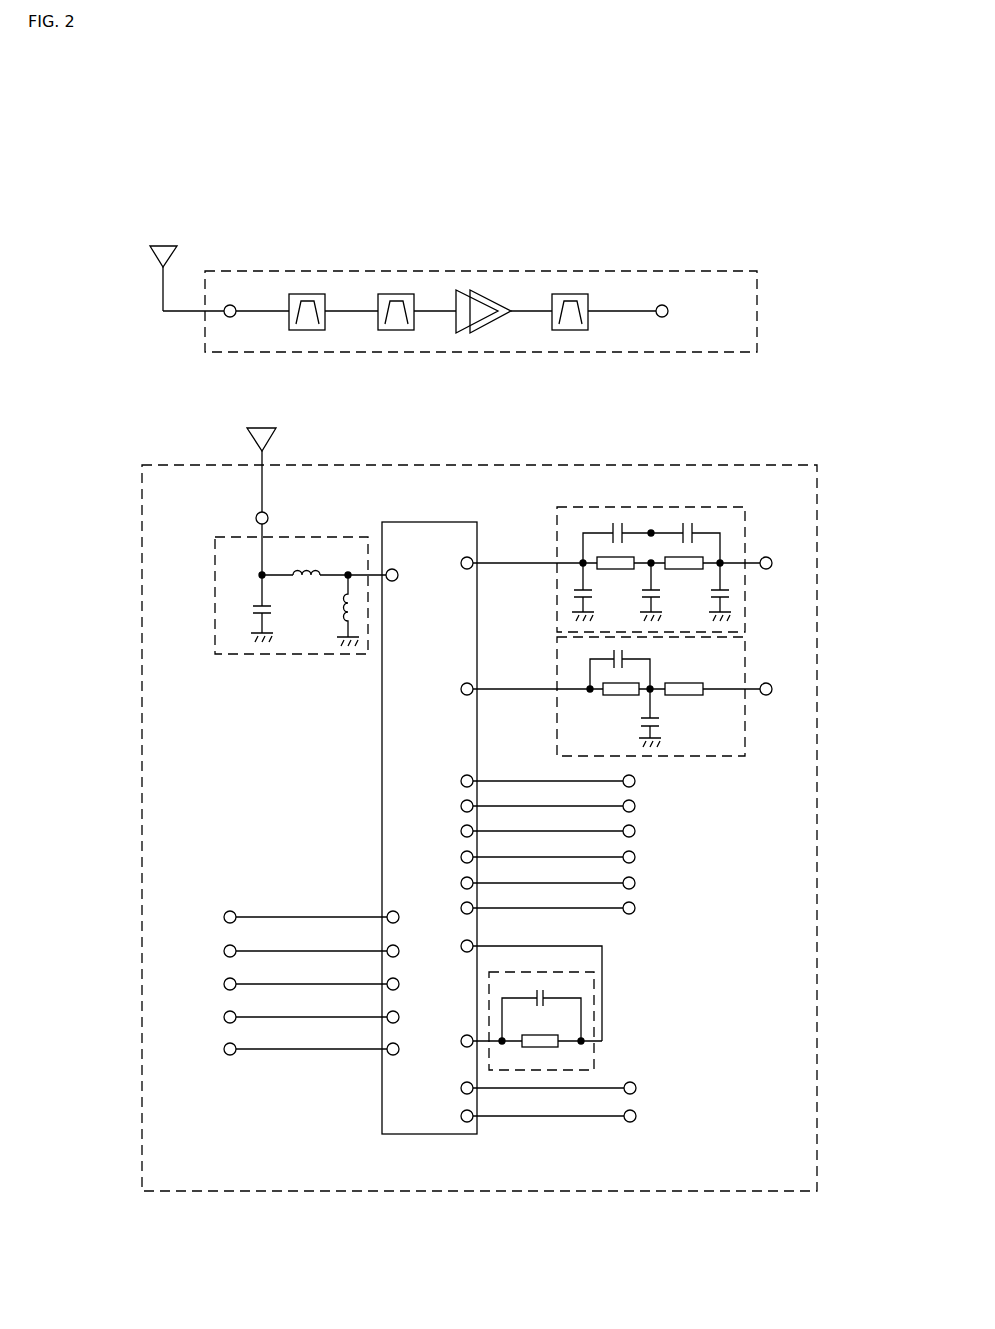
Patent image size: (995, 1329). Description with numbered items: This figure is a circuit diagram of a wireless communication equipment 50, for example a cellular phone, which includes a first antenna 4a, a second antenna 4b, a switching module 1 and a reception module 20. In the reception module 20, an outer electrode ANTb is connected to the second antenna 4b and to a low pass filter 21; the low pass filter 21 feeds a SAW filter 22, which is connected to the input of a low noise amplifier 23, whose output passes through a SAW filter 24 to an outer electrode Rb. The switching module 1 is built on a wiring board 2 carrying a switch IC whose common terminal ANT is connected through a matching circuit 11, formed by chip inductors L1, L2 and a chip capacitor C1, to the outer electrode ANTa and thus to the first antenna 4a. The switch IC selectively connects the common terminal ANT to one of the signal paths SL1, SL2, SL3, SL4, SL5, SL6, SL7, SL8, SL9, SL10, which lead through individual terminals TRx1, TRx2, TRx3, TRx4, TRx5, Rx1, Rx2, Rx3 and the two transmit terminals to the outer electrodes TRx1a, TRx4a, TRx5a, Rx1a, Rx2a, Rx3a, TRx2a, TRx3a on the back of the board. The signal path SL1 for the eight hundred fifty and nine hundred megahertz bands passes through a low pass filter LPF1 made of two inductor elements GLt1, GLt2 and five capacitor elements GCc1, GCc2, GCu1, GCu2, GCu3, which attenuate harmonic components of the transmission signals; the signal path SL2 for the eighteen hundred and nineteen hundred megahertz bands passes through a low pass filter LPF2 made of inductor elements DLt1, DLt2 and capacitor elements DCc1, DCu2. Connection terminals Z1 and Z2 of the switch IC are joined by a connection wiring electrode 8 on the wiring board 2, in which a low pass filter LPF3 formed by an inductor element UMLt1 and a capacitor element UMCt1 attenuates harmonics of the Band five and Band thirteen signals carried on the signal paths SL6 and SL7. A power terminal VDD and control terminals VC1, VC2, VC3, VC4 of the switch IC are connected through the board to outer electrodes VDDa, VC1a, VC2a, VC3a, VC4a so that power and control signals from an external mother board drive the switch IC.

The wireless communication equipment 50 is at (99, 199).
The reception module 20 is at (718, 266).
The second antenna 4b is at (160, 244).
The outer electrode ANTb is at (232, 305).
The low pass filter 21 is at (303, 294).
The SAW filter 22 is at (393, 294).
The low noise amplifier LNA 23 is at (495, 300).
The SAW filter 24 is at (572, 294).
The outer electrode Rb is at (662, 318).
The switching module 1 is at (818, 463).
The first antenna 4a is at (254, 428).
The outer electrode ANTa is at (283, 542).
The matching circuit 11 is at (281, 659).
The chip inductor L1 is at (306, 559).
The chip inductor L2 is at (338, 610).
The chip capacitor C1 is at (252, 608).
The wiring board 2 is at (465, 465).
The common terminal ANT is at (396, 564).
The individual terminal TRx1 is at (446, 781).
The individual terminal TRx4 is at (446, 806).
The individual terminal TRx5 is at (446, 831).
The individual terminal Rx1 is at (451, 857).
The individual terminal Rx2 is at (451, 883).
The individual terminal Rx3 is at (451, 908).
The connection terminal Z1 is at (456, 946).
The connection terminal Z2 is at (456, 1041).
The individual terminal TRx2 is at (446, 1088).
The individual terminal TRx3 is at (446, 1116).
The power terminal VDD is at (393, 911).
The control terminal VC1 is at (408, 952).
The control terminal VC2 is at (408, 985).
The control terminal VC3 is at (408, 1018).
The control terminal VC4 is at (408, 1050).
The outer electrode VDDa is at (283, 917).
The outer electrode VC1a is at (283, 951).
The outer electrode VC2a is at (283, 984).
The outer electrode VC3a is at (283, 1017).
The outer electrode VC4a is at (283, 1049).
The signal path SL1 is at (538, 560).
The low pass filter LPF1 is at (705, 507).
The inductor element GLt1 is at (613, 553).
The inductor element GLt2 is at (684, 553).
The capacitor element GCc1 is at (617, 536).
The capacitor element GCc2 is at (685, 536).
The capacitor element GCu1 is at (602, 592).
The capacitor element GCu2 is at (670, 592).
The capacitor element GCu3 is at (739, 592).
The signal path SL2 is at (538, 685).
The low pass filter LPF2 is at (748, 655).
The inductor element DLt1 is at (615, 700).
The inductor element DLt2 is at (684, 679).
The capacitor element DCc1 is at (620, 662).
The capacitor element DCu2 is at (669, 718).
The signal path SL3 is at (500, 779).
The signal path SL4 is at (606, 795).
The signal path SL5 is at (606, 833).
The signal path SL8 is at (606, 860).
The signal path SL9 is at (606, 886).
The signal path SL10 is at (607, 910).
The outer electrode TRx1a is at (651, 781).
The outer electrode TRx4a is at (651, 806).
The outer electrode TRx5a is at (651, 831).
The outer electrode Rx1a is at (649, 857).
The outer electrode Rx2a is at (649, 883).
The outer electrode Rx3a is at (649, 908).
The connection wiring electrode 8 is at (602, 975).
The low pass filter LPF3 is at (588, 970).
The inductor element UMLt1 is at (536, 1030).
The capacitor element UMCt1 is at (541, 1009).
The signal path SL6 is at (608, 1086).
The signal path SL7 is at (598, 1118).
The outer electrode TRx2a is at (652, 1088).
The outer electrode TRx3a is at (652, 1116).